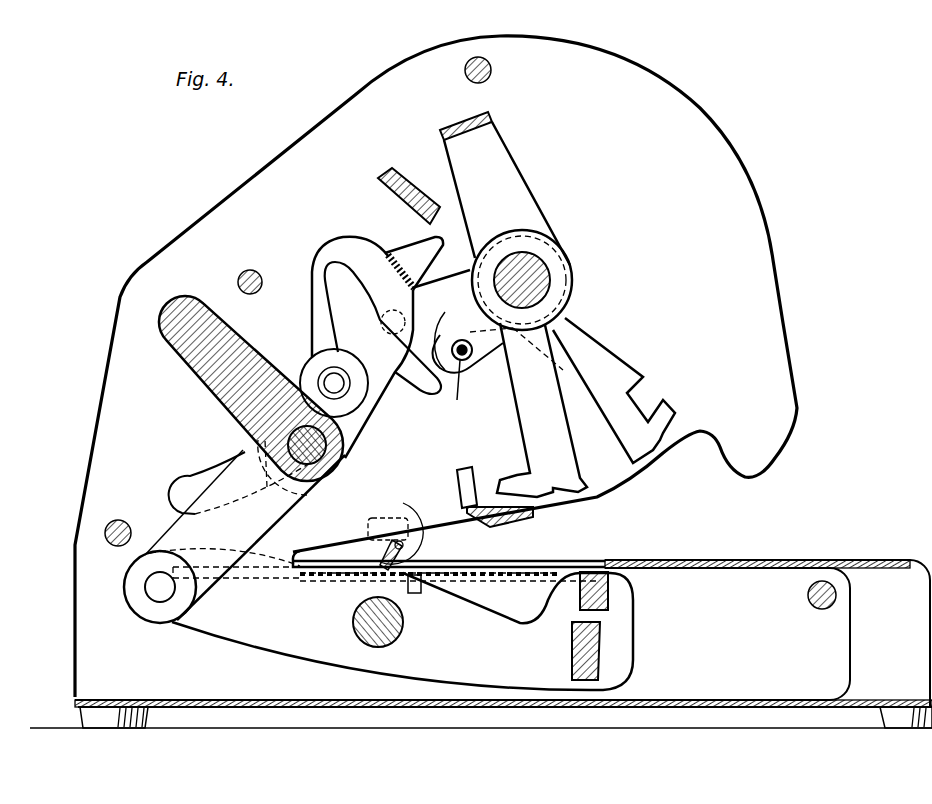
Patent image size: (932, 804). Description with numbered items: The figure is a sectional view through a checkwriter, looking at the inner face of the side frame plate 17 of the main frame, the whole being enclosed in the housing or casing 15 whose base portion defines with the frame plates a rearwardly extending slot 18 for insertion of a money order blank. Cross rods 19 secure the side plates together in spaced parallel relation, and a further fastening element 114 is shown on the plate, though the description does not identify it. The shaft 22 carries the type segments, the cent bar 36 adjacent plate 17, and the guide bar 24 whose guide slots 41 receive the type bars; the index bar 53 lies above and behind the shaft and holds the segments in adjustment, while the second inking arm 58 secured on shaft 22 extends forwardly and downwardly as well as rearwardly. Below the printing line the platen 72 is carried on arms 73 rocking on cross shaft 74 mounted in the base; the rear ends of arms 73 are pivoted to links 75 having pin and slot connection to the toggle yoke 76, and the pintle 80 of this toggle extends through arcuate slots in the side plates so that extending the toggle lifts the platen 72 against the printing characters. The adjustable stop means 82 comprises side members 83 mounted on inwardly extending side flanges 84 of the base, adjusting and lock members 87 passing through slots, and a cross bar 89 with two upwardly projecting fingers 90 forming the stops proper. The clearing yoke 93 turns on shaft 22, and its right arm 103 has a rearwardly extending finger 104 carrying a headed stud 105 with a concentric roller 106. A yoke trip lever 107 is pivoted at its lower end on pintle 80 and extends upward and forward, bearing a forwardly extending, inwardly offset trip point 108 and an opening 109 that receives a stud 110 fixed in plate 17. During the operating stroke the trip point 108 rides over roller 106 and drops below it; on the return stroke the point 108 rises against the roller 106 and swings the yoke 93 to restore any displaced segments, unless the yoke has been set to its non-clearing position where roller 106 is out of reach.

The housing or casing 15 is at (877, 558).
The side frame plate 17 is at (712, 155).
The slot 18 is at (415, 553).
The cross rods 19 is at (492, 72).
The shaft 22 is at (545, 278).
The guide bar 24 is at (512, 517).
The cent bar 36 is at (535, 433).
The guide slots 41 is at (460, 495).
The index bar 53 is at (378, 181).
The second inking arm 58 is at (616, 367).
The platen 72 is at (610, 598).
The arms 73 is at (508, 622).
The cross shaft 74 is at (395, 632).
The links 75 is at (283, 528).
The toggle yoke 76 is at (222, 397).
The pintle 80 is at (345, 443).
The adjustable stop means 82 is at (348, 548).
The side members 83 is at (330, 585).
The side flanges 84 is at (205, 590).
The adjusting and lock members 87 is at (375, 518).
The cross bar 89 is at (400, 580).
The fingers 90 is at (412, 530).
The clearing yoke 93 is at (487, 124).
The right arm 103 is at (512, 185).
The finger 104 is at (492, 375).
The headed stud 105 is at (454, 387).
The roller 106 is at (460, 340).
The yoke trip lever 107 is at (382, 388).
The trip point 108 is at (442, 234).
The opening 109 is at (337, 303).
The stud 110 is at (322, 372).
The screw 114 is at (260, 252).